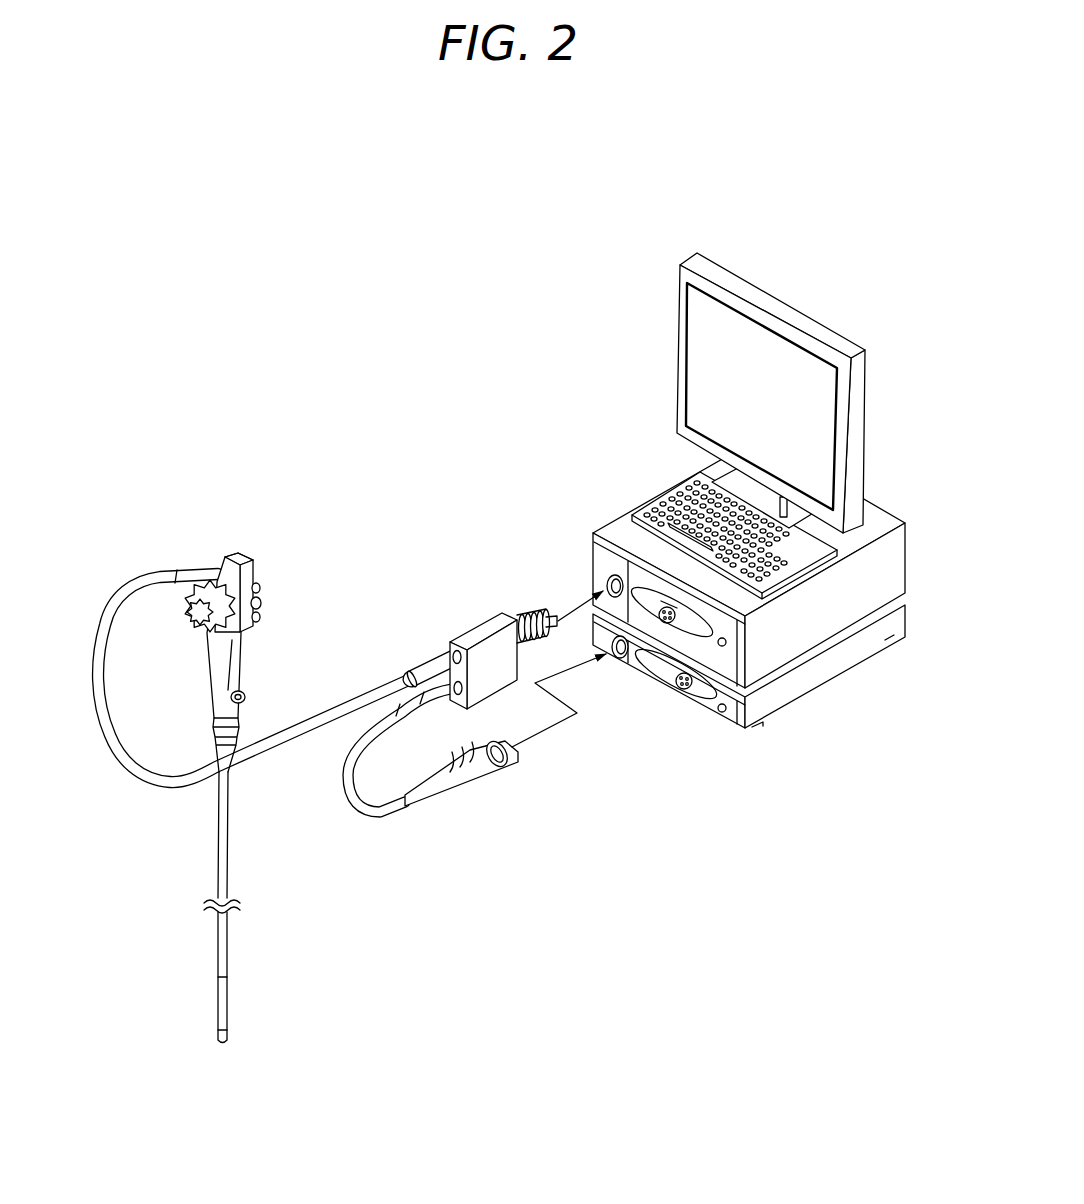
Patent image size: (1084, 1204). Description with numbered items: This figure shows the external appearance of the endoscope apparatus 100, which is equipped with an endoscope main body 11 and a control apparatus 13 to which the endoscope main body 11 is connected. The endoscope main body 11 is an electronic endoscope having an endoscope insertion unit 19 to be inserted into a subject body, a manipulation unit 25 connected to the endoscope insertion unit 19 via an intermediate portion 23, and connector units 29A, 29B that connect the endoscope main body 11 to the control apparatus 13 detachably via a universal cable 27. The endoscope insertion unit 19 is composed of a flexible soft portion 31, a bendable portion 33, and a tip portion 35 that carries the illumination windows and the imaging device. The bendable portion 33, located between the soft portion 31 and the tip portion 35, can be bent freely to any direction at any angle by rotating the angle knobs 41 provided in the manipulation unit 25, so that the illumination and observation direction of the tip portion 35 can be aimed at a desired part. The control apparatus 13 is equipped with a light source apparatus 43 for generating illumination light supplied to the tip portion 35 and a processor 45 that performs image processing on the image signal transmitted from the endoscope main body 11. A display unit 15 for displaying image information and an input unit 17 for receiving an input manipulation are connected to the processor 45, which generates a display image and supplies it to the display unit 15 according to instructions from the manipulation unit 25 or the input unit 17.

The endoscope apparatus 100 is at (320, 388).
The endoscope main body 11 is at (369, 567).
The control apparatus 13 is at (870, 815).
The display unit 15 is at (680, 290).
The input unit 17 is at (680, 488).
The endoscope insertion unit 19 is at (247, 878).
The intermediate portion 23 is at (245, 667).
The manipulation unit 25 is at (222, 556).
The universal cable 27 is at (132, 773).
The connector unit 29A is at (492, 630).
The connector unit 29B is at (478, 782).
The soft portion 31 is at (217, 879).
The bendable portion 33 is at (227, 1002).
The tip portion 35 is at (227, 1034).
The angle knobs 41 is at (183, 603).
The light source apparatus 43 is at (832, 627).
The processor 45 is at (773, 707).